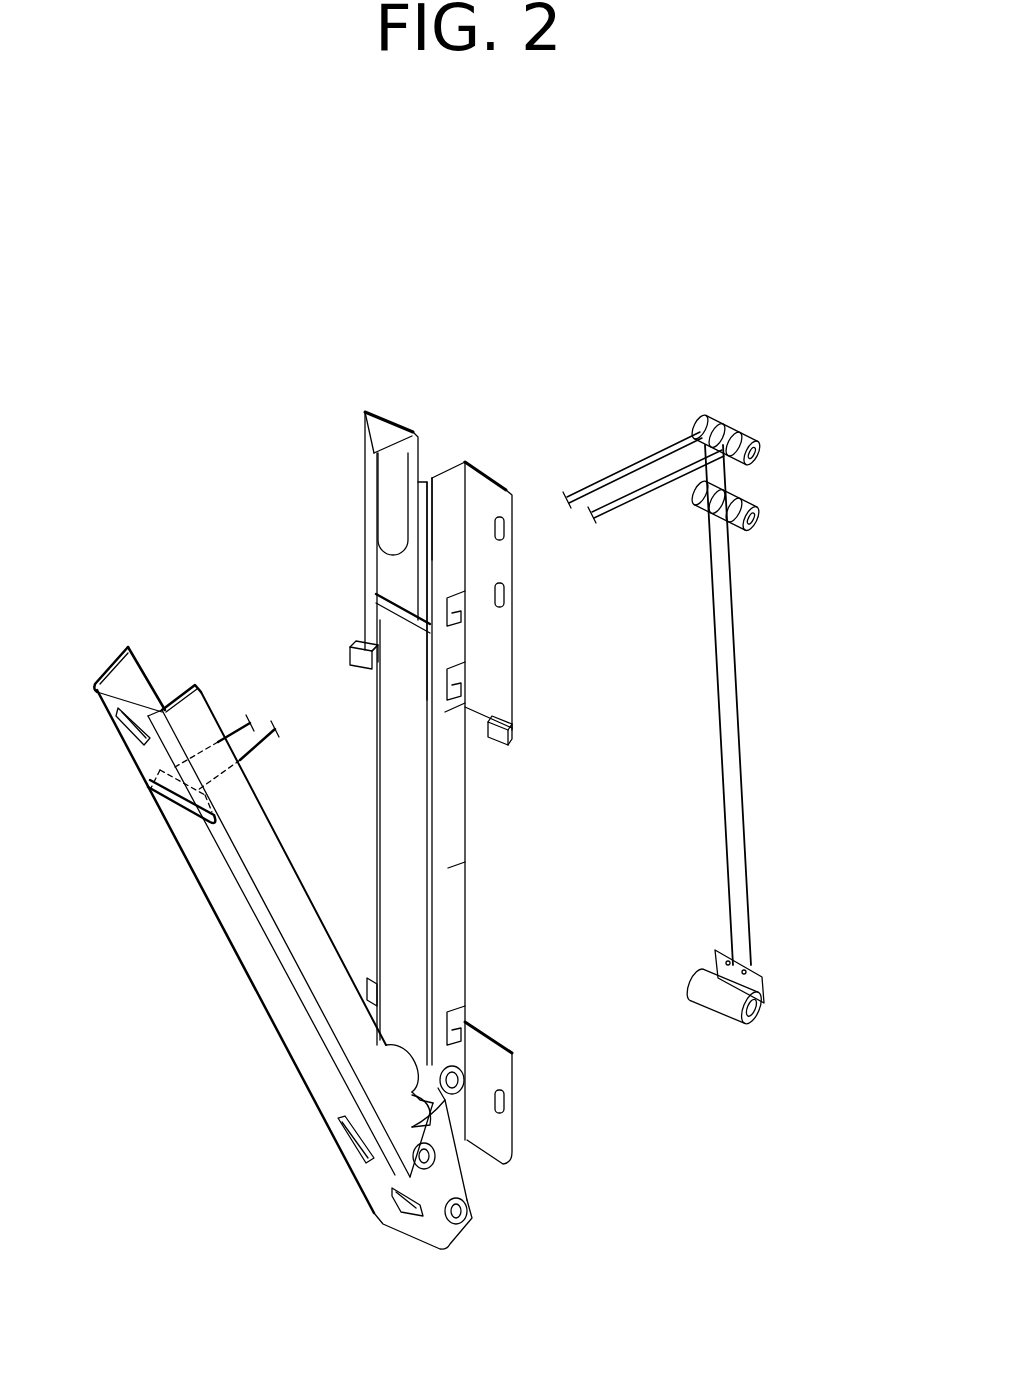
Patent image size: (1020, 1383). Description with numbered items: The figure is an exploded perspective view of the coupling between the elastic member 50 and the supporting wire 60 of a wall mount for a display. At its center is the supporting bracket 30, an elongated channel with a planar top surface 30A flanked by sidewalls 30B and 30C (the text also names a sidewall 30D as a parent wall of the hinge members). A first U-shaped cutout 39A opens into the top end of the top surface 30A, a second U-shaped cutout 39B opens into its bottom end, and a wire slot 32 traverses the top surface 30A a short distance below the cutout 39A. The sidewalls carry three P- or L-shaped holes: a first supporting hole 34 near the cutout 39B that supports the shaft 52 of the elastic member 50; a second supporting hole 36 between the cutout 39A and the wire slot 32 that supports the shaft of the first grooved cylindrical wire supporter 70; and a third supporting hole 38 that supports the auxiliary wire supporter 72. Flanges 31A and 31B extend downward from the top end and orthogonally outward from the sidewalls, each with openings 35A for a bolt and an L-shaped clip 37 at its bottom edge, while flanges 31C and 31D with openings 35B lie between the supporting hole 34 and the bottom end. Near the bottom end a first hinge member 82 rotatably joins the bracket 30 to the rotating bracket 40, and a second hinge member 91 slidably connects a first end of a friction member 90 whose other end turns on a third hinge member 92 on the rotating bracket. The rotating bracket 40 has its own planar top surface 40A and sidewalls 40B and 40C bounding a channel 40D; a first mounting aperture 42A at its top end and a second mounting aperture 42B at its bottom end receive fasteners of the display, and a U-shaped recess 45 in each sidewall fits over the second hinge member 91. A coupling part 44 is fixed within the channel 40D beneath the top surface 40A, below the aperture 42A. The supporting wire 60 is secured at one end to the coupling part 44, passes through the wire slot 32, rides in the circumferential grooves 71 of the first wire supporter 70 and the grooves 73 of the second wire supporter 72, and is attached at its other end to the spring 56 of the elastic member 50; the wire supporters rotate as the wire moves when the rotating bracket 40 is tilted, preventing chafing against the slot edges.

The supporting bracket 30 is at (470, 826).
The planar top surface 30A is at (387, 713).
The sidewall 30B is at (405, 452).
The sidewall 30C is at (455, 912).
The sidewall 30D is at (430, 457).
The flange 31A is at (372, 410).
The flange 31B is at (493, 477).
The flange 31C is at (370, 987).
The flange 31D is at (503, 1062).
The wire slot 32 is at (370, 620).
The first supporting hole 34 is at (465, 1007).
The openings 35A is at (503, 587).
The openings 35B is at (505, 1105).
The second supporting hole 36 is at (455, 613).
The clip 37 is at (510, 732).
The third supporting hole 38 is at (453, 680).
The first U-shaped cutout 39A is at (385, 518).
The second U-shaped cutout 39B is at (408, 1045).
The rotating bracket 40 is at (278, 1045).
The planar top surface 40A is at (227, 930).
The sidewall 40B is at (110, 670).
The sidewall 40C is at (193, 687).
The channel 40D is at (158, 682).
The first mounting aperture 42A is at (117, 737).
The second mounting aperture 42B is at (350, 1140).
The coupling part 44 is at (153, 810).
The U-shaped recess 45 is at (412, 1160).
The elastic member 50 is at (778, 1012).
The shaft 52 is at (755, 1025).
The spring 56 is at (760, 975).
The supporting wire 60 is at (745, 775).
The first wire supporter 70 is at (763, 447).
The circumferential grooves 71 is at (707, 423).
The second wire supporter 72 is at (763, 522).
The grooves 73 is at (700, 510).
The first hinge member 82 is at (460, 1225).
The friction member 90 is at (450, 1113).
The second hinge member 91 is at (455, 1098).
The third hinge member 92 is at (415, 1220).